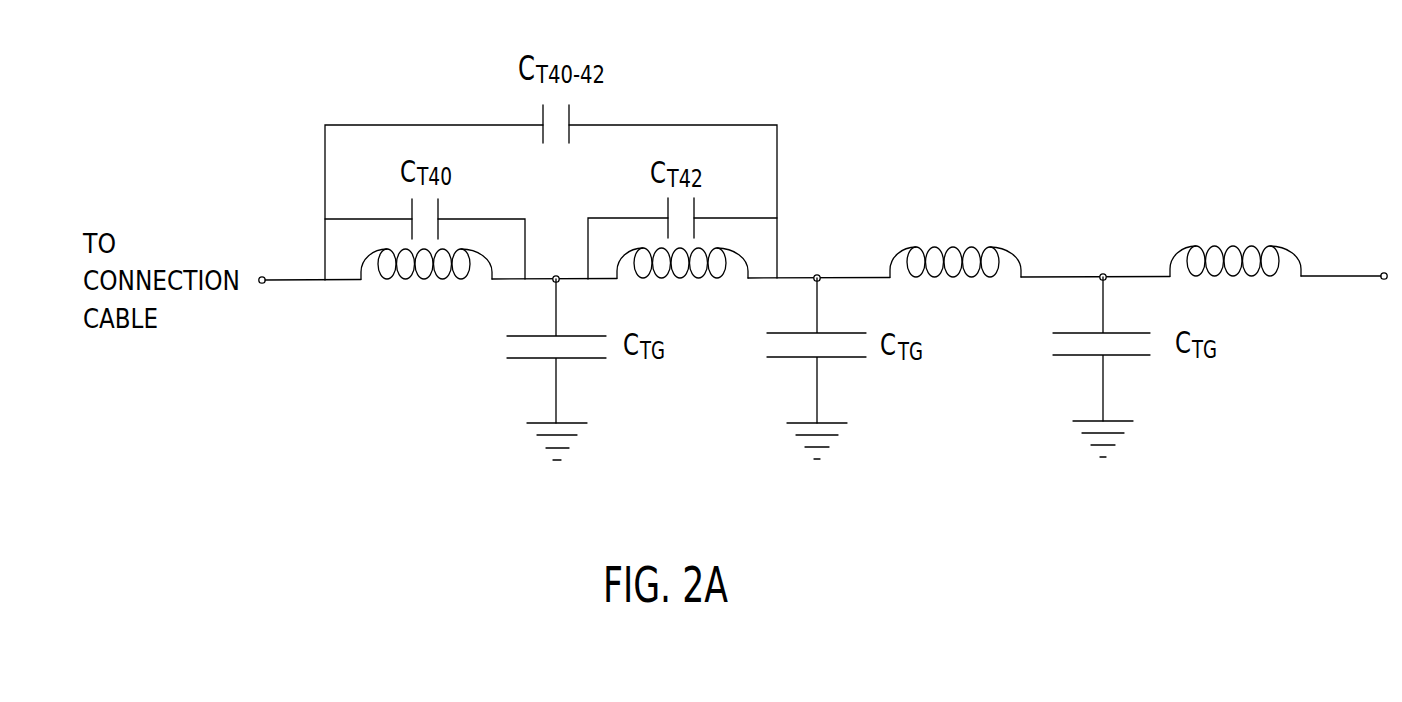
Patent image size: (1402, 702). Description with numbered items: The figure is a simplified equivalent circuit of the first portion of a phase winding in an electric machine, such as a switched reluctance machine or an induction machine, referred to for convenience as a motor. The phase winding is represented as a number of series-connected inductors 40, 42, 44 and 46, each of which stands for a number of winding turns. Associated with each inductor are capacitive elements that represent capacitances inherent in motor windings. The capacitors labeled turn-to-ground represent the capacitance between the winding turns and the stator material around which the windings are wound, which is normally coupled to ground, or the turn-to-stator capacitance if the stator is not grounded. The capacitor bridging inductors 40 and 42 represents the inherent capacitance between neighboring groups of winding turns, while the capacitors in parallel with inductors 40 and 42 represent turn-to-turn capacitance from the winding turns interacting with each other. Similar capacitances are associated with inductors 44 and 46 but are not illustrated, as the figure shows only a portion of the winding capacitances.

The inductor 40 is at (400, 280).
The inductor 42 is at (675, 279).
The inductor 44 is at (946, 278).
The inductor 46 is at (1228, 277).